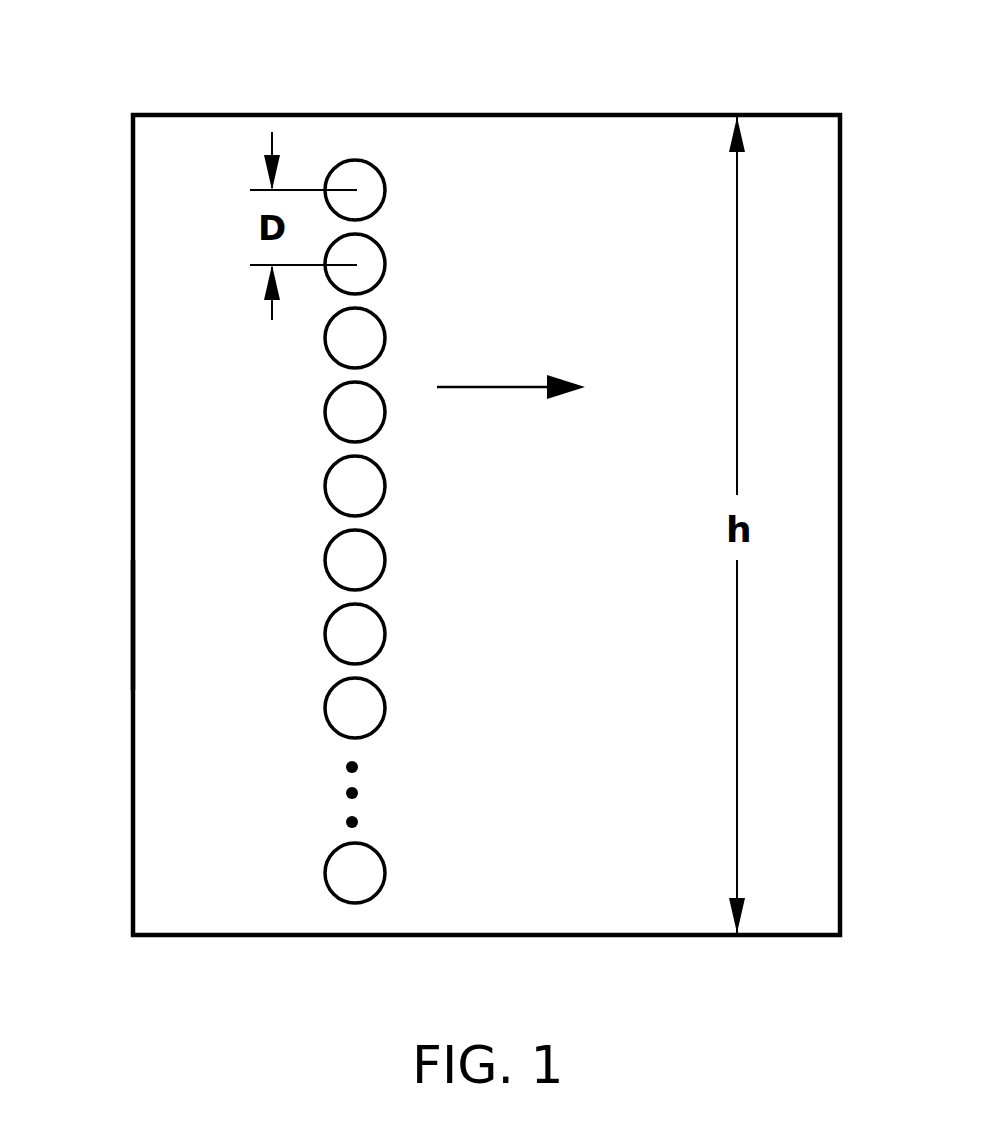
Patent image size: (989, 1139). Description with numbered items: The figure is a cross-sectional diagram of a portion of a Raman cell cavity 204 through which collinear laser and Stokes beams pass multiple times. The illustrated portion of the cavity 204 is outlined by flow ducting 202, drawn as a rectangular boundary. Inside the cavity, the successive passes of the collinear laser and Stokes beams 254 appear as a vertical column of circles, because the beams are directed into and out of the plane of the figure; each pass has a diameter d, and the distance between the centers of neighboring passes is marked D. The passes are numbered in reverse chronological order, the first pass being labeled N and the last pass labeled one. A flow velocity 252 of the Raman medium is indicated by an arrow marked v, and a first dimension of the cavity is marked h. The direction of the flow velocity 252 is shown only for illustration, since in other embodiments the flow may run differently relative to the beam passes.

The flow ducting 202 is at (590, 113).
The Raman cell cavity 204 is at (157, 622).
The flow velocity 252 is at (493, 377).
The collinear laser and Stokes beams 254 is at (386, 190).